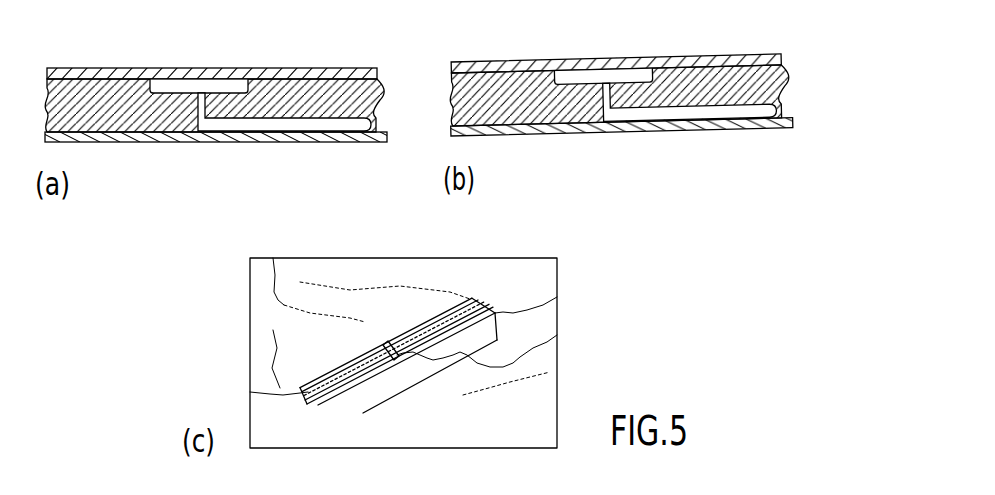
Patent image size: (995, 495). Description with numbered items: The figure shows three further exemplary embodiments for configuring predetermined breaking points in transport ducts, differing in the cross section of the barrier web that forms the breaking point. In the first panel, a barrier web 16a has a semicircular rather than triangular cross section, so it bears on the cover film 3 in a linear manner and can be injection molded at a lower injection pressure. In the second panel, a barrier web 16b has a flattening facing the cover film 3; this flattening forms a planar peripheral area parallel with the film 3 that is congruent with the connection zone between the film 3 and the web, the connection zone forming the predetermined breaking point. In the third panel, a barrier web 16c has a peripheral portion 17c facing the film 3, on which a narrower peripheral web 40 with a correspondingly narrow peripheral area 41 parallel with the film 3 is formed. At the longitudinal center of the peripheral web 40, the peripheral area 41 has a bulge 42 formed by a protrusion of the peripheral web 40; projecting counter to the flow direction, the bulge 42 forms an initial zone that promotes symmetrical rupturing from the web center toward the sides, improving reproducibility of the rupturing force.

The cover film 3 is at (309, 137).
The barrier web 16a is at (236, 122).
The barrier web 16b is at (642, 118).
The barrier web 16c is at (327, 380).
The peripheral portion 17c is at (385, 338).
The peripheral web 40 is at (557, 297).
The peripheral area 41 is at (247, 393).
The bulge 42 is at (557, 336).